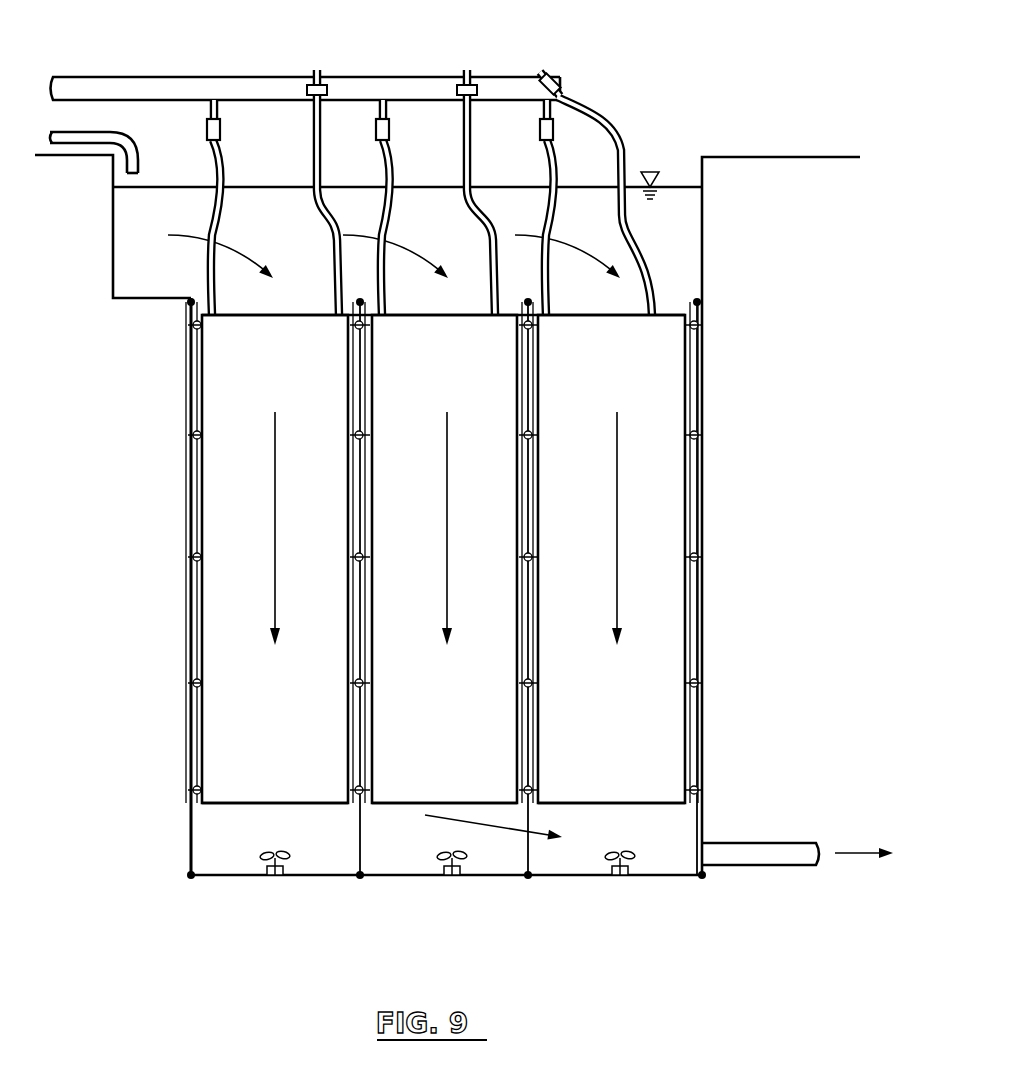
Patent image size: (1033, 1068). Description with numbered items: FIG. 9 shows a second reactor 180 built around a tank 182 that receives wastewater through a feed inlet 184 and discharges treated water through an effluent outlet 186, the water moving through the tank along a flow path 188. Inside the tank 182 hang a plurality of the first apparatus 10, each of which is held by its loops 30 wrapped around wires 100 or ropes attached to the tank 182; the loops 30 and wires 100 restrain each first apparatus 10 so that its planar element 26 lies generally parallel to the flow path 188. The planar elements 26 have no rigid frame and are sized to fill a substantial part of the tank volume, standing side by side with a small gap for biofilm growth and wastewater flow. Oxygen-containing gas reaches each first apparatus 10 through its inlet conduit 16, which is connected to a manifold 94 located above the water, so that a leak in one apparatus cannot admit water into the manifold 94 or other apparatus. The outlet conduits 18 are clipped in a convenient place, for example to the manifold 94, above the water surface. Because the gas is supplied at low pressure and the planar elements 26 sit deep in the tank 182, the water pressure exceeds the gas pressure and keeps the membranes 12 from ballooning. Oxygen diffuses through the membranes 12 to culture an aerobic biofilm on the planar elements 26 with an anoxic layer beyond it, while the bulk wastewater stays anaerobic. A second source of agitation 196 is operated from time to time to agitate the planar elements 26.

The first apparatus 10 is at (260, 767).
The membranes 12 is at (304, 525).
The inlet conduit 16 is at (223, 158).
The outlet conduits 18 is at (321, 145).
The planar element 26 is at (260, 377).
The loops 30 is at (193, 435).
The manifold 94 is at (380, 77).
The wires 100 is at (190, 359).
The second reactor 180 is at (112, 758).
The tank 182 is at (178, 810).
The feed inlet 184 is at (73, 146).
The effluent outlet 186 is at (763, 842).
The flow path 188 is at (273, 528).
The second source of agitation 196 is at (284, 858).